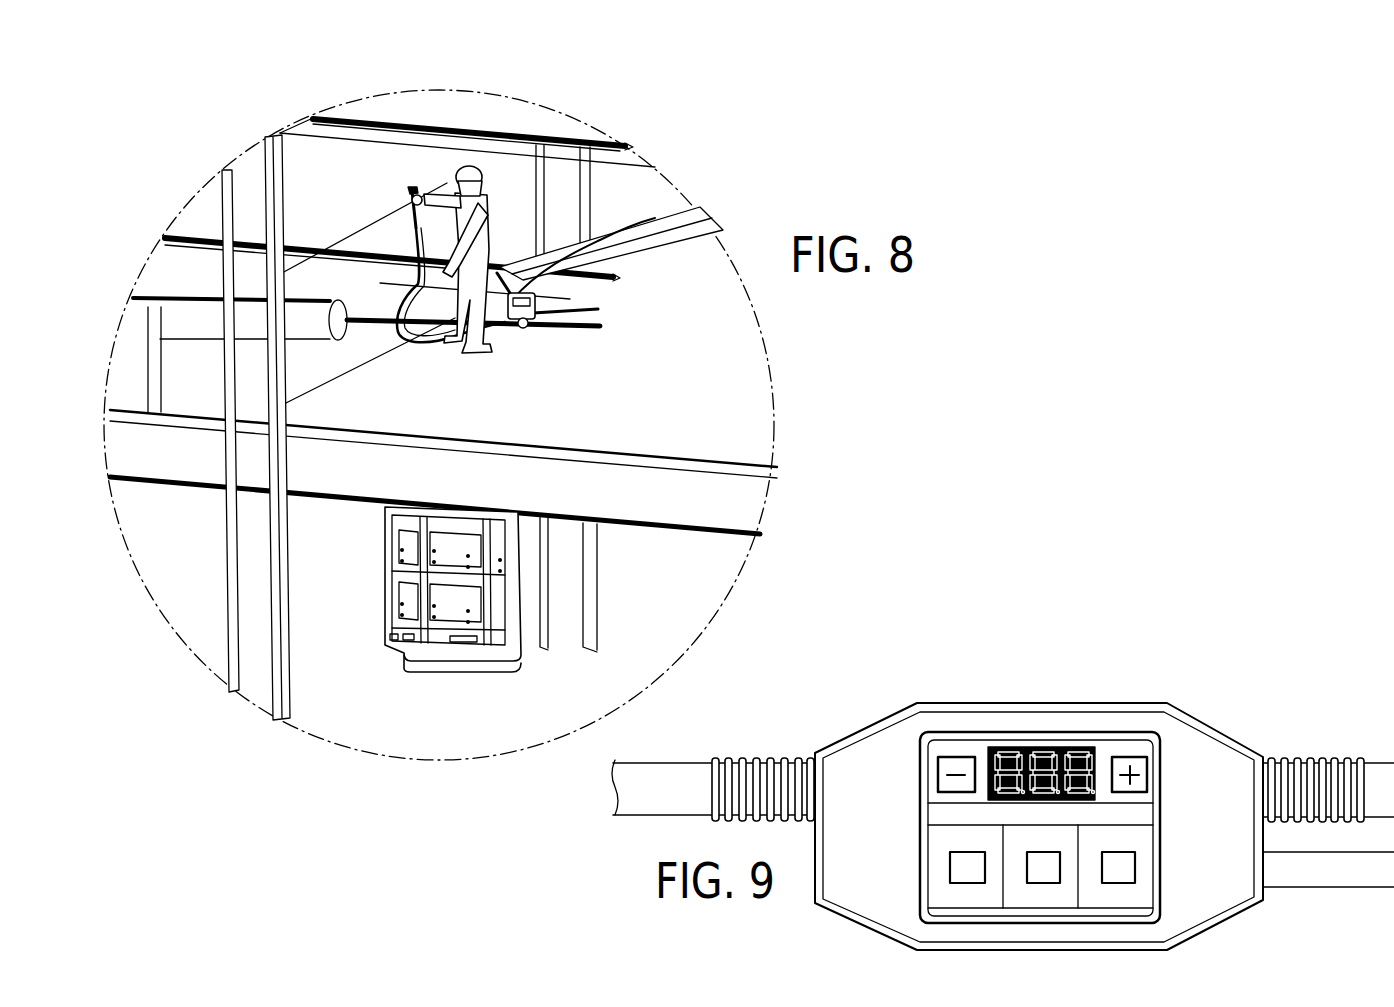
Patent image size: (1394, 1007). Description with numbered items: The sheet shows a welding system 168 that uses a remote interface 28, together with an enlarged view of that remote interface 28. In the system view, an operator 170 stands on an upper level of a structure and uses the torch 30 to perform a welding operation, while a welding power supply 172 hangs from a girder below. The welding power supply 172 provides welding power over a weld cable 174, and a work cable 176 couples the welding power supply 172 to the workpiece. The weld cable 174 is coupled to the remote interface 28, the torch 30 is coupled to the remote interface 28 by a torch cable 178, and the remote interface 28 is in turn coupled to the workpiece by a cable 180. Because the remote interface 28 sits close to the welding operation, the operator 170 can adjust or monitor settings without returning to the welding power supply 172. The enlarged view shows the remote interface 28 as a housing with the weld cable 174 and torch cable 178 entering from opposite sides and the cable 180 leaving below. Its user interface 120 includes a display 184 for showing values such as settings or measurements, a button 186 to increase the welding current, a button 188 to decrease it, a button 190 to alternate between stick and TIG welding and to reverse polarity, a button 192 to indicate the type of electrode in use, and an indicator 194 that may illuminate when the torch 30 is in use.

In FIG. 8, the welding system 168 is at (200, 79).
In FIG. 8, the operator 170 is at (462, 195).
In FIG. 8, the welding power supply 172 is at (505, 645).
In FIG. 8, the weld cable 174 is at (670, 275).
In FIG. 9, the weld cable 174 is at (778, 758).
In FIG. 8, the work cable 176 is at (583, 242).
In FIG. 8, the torch cable 178 is at (403, 298).
In FIG. 9, the torch cable 178 is at (1318, 758).
In FIG. 8, the cable 180 is at (598, 309).
In FIG. 9, the cable 180 is at (1342, 888).
In FIG. 8, the torch 30 is at (412, 198).
In FIG. 8, the remote interface 28 is at (524, 328).
In FIG. 9, the remote interface 28 is at (873, 648).
In FIG. 9, the user interface 120 is at (932, 858).
In FIG. 9, the display 184 is at (1047, 745).
In FIG. 9, the button 186 is at (1147, 775).
In FIG. 9, the button 188 is at (937, 775).
In FIG. 9, the button 190 is at (948, 868).
In FIG. 9, the button 192 is at (1061, 868).
In FIG. 9, the indicator 194 is at (1136, 867).